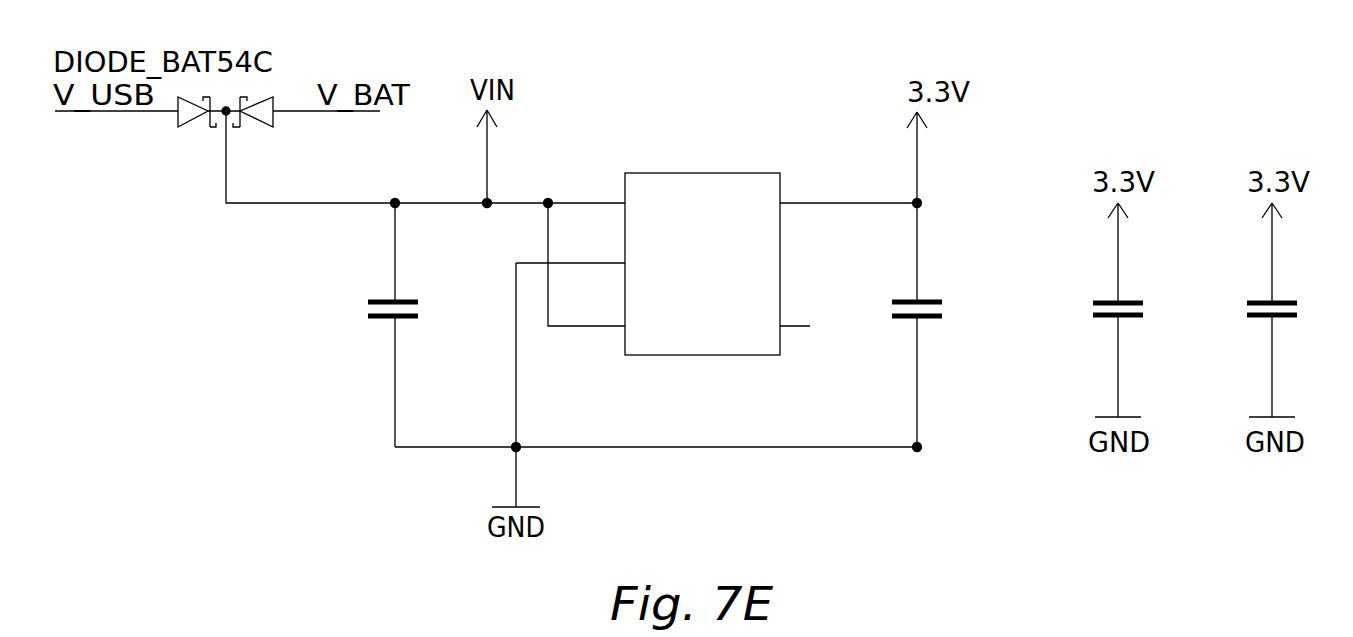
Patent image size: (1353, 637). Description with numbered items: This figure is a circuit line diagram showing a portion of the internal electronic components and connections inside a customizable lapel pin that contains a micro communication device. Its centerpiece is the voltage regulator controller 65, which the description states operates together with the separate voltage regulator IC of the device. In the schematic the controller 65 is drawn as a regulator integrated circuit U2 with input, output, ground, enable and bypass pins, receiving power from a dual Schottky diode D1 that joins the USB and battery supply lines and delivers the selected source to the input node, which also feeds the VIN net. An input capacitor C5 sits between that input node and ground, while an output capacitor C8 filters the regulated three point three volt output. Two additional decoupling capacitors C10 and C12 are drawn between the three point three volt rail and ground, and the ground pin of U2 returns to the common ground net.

The voltage regulator controller 65 is at (721, 219).
The MIC5219 3.3V voltage regulator IC U2 is at (721, 265).
The BAT54C dual Schottky diode D1 is at (224, 132).
The 1uF input capacitor C5 is at (415, 325).
The 4.7uF output capacitor C8 is at (952, 325).
The .1uF decoupling capacitor C10 is at (1143, 310).
The .1uF decoupling capacitor C12 is at (1298, 310).